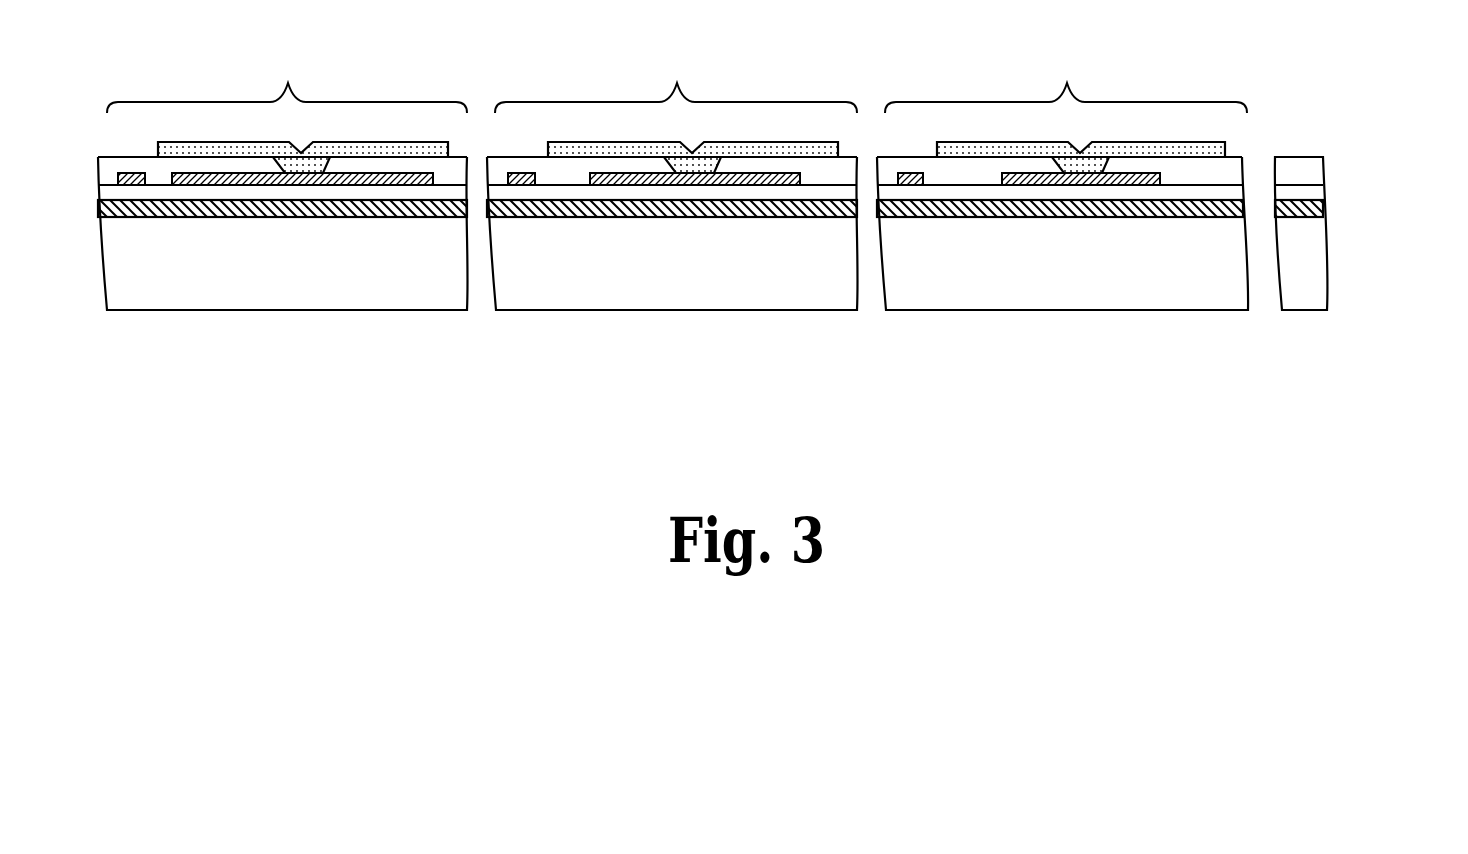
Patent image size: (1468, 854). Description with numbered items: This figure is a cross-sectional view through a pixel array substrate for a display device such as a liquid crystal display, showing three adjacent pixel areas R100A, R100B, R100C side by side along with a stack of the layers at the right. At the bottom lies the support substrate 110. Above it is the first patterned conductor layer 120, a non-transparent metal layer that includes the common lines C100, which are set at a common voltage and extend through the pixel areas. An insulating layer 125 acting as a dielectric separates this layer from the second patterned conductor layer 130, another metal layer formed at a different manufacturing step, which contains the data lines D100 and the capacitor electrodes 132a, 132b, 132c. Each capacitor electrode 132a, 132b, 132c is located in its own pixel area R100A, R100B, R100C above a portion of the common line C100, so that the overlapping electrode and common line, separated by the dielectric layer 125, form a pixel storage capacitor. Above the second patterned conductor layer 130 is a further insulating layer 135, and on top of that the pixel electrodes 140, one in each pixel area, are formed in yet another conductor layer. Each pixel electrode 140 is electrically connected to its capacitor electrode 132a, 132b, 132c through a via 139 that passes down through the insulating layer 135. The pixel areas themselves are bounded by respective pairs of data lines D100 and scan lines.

The support substrate 110 is at (1340, 270).
The first patterned conductor layer 120 is at (1325, 207).
The insulating layer 125 is at (1323, 188).
The second patterned conductor layer 130 is at (1170, 176).
The insulating layer 135 is at (1327, 168).
The capacitor electrode 132a is at (190, 178).
The capacitor electrode 132b is at (630, 178).
The capacitor electrode 132c is at (1018, 178).
The via 139 is at (280, 155).
The pixel electrode 140 is at (373, 150).
The data line D100 is at (907, 172).
The common line C100 is at (970, 216).
The pixel area R100A is at (287, 76).
The pixel area R100B is at (676, 76).
The pixel area R100C is at (1066, 76).